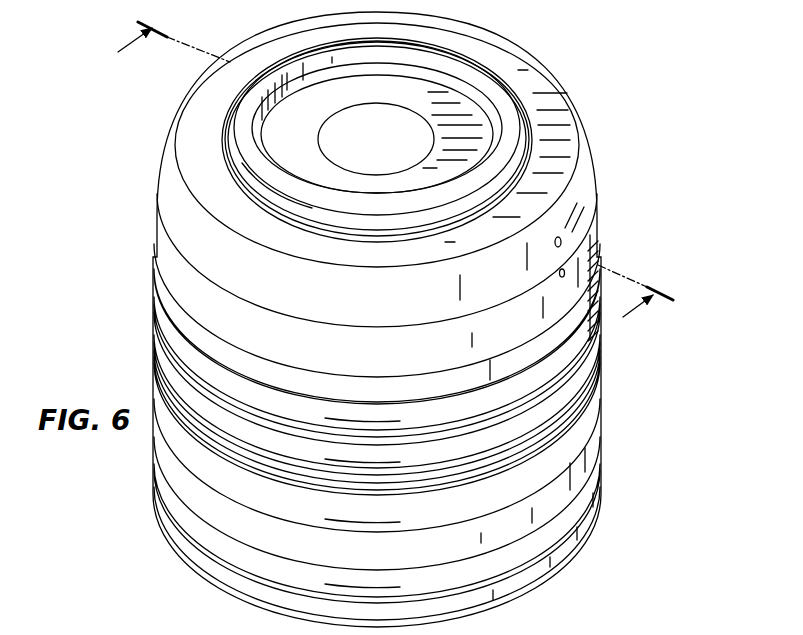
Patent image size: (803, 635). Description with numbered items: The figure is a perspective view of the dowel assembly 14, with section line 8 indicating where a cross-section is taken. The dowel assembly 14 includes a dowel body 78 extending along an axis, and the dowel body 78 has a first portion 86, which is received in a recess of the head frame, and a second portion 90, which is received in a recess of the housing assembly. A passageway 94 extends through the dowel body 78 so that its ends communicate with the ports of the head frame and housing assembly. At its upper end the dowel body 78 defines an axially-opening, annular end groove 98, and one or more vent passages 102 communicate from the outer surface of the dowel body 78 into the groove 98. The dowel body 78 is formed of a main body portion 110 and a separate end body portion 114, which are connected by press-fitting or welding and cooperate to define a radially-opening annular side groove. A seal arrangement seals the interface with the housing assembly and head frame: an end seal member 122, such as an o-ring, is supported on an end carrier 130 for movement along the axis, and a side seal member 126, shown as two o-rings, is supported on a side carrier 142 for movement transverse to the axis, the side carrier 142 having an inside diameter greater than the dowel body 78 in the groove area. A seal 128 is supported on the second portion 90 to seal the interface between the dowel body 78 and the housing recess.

The section line 8- 8 is at (386, 181).
The dowel assembly 14 is at (615, 107).
The dowel body 78 is at (567, 205).
The first portion 86 is at (137, 238).
The second portion 90 is at (140, 517).
The passageway 94 is at (415, 133).
The annular end groove 98 is at (220, 138).
The vent passages 102 is at (563, 242).
The main body portion 110 is at (200, 295).
The end body portion 114 is at (272, 533).
The end seal member 122 is at (518, 95).
The side seal member 126 is at (572, 392).
The seal 128 is at (563, 513).
The end carrier 130 is at (283, 80).
The side carrier 142 is at (562, 420).